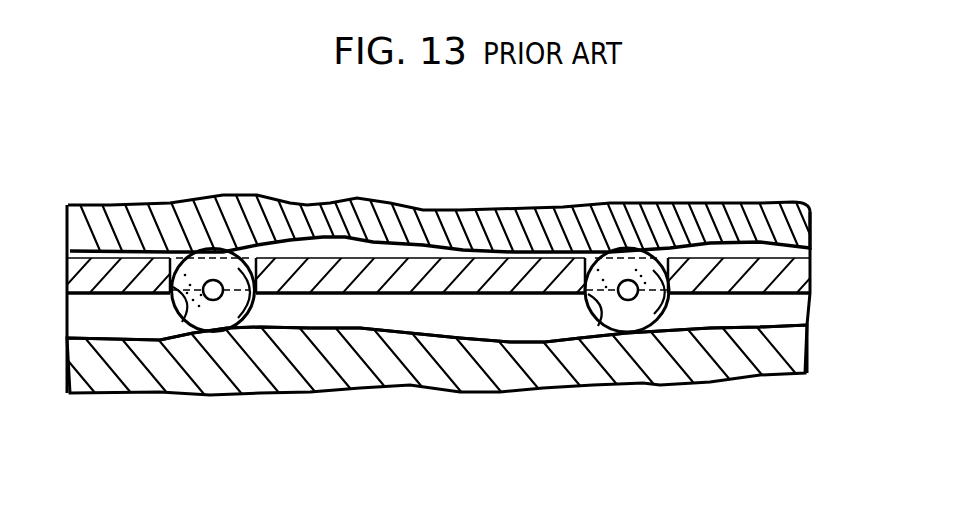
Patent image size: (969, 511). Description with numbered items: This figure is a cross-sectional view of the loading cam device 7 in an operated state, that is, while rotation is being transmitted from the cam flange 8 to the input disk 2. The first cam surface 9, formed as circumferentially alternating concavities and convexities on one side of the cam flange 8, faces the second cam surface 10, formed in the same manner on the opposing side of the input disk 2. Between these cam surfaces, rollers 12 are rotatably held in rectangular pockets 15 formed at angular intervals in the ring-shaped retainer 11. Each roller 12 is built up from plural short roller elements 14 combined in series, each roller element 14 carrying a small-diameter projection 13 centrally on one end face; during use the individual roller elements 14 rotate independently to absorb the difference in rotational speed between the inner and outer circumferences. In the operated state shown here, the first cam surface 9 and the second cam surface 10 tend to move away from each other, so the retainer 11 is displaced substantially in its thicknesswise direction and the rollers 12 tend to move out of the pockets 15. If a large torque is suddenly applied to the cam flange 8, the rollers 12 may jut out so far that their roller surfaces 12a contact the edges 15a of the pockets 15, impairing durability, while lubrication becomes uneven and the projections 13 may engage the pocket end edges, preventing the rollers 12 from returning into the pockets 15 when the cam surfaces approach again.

The input disk 2 is at (765, 358).
The loading cam device 7 is at (451, 287).
The cam flange 8 is at (444, 193).
The first cam surface 9 is at (354, 237).
The second cam surface 10 is at (534, 357).
The retainer 11 is at (789, 268).
The roller 12 is at (433, 311).
The roller surface 12a is at (657, 257).
The projection 13 is at (215, 280).
The roller element 14 is at (198, 265).
The pocket 15 is at (241, 330).
The edge 15a is at (190, 330).